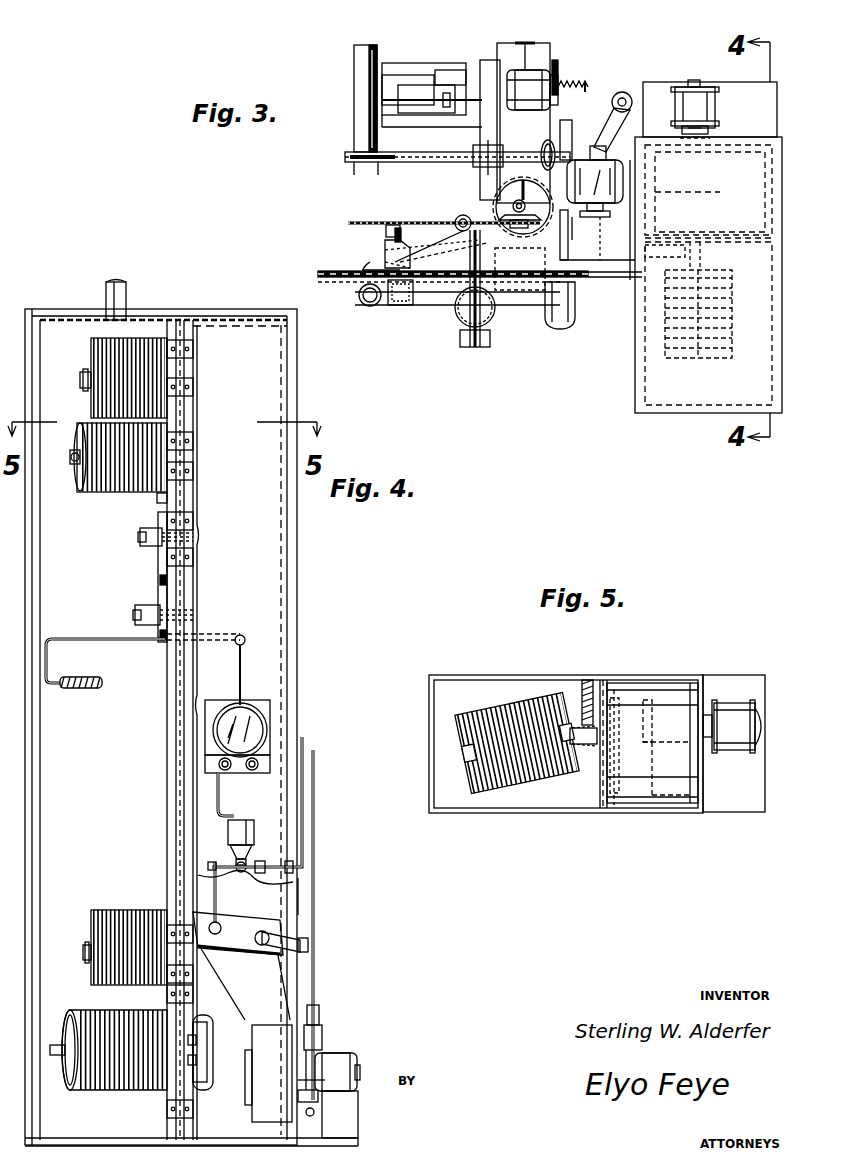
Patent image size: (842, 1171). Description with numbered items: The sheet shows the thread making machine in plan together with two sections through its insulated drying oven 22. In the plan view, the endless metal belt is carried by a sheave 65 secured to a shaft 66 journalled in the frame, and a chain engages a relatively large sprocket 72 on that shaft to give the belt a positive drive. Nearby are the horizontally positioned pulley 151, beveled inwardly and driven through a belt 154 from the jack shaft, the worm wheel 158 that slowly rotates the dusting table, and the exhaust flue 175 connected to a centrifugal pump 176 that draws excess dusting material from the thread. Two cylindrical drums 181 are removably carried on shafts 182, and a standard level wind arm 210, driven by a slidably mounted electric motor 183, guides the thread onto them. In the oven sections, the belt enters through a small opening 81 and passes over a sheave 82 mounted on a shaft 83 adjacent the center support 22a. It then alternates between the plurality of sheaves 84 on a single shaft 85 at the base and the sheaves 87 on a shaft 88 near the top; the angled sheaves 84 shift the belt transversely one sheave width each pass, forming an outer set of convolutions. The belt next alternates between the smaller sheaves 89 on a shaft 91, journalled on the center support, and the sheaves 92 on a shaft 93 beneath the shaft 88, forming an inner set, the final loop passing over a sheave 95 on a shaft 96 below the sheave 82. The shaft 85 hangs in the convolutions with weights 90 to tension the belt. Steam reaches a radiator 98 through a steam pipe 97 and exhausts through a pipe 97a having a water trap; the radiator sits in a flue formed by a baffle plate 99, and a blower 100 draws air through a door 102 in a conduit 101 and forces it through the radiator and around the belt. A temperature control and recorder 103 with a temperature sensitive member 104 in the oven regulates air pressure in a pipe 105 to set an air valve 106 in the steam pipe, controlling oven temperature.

In FIG. 3, the drying oven 22 is at (694, 414).
In FIG. 4, the drying oven 22 is at (30, 793).
In FIG. 5, the drying oven 22 is at (507, 677).
In FIG. 4, the center support 22a is at (174, 842).
In FIG. 5, the center support 22a is at (582, 688).
In FIG. 3, the sheave 65 is at (349, 281).
In FIG. 3, the shaft 66 is at (410, 212).
In FIG. 3, the sprocket 72 is at (439, 227).
In FIG. 4, the opening 81 is at (157, 499).
In FIG. 4, the sheave 82 is at (158, 521).
In FIG. 4, the shaft 83 is at (138, 541).
In FIG. 4, the sheaves 84 is at (120, 1011).
In FIG. 4, the shaft 85 is at (55, 1051).
In FIG. 3, the sheaves 87 is at (725, 363).
In FIG. 4, the sheaves 87 is at (91, 354).
In FIG. 4, the shaft 88 is at (80, 382).
In FIG. 4, the sheaves 89 is at (91, 921).
In FIG. 4, the weights 90 is at (209, 1016).
In FIG. 5, the weights 90 is at (613, 752).
In FIG. 4, the shaft 91 is at (83, 952).
In FIG. 4, the sheaves 92 is at (80, 473).
In FIG. 5, the sheaves 92 is at (517, 786).
In FIG. 4, the shaft 93 is at (71, 461).
In FIG. 4, the sheave 95 is at (160, 593).
In FIG. 4, the shaft 96 is at (135, 618).
In FIG. 4, the steam pipe 97 is at (306, 745).
In FIG. 4, the exhaust pipe 97a is at (309, 946).
In FIG. 4, the radiator 98 is at (227, 947).
In FIG. 5, the radiator 98 is at (675, 765).
In FIG. 4, the baffle plate 99 is at (198, 600).
In FIG. 3, the blower 100 is at (702, 101).
In FIG. 4, the blower 100 is at (383, 1044).
In FIG. 5, the blower 100 is at (734, 705).
In FIG. 4, the conduit 101 is at (254, 1032).
In FIG. 4, the door 102 is at (246, 1103).
In FIG. 4, the temperature control and recorder 103 is at (275, 676).
In FIG. 4, the temperature sensitive member 104 is at (84, 689).
In FIG. 4, the pipe 105 is at (224, 798).
In FIG. 4, the air valve 106 is at (279, 812).
In FIG. 3, the pulley 151 is at (369, 269).
In FIG. 3, the belt 154 is at (446, 250).
In FIG. 3, the worm wheel 158 is at (390, 258).
In FIG. 3, the exhaust flue 175 is at (365, 303).
In FIG. 3, the centrifugal pump 176 is at (575, 300).
In FIG. 3, the cylindrical drums 181 is at (361, 50).
In FIG. 3, the shafts 182 is at (414, 92).
In FIG. 3, the electric motor 183 is at (534, 123).
In FIG. 3, the arm 210 is at (438, 158).